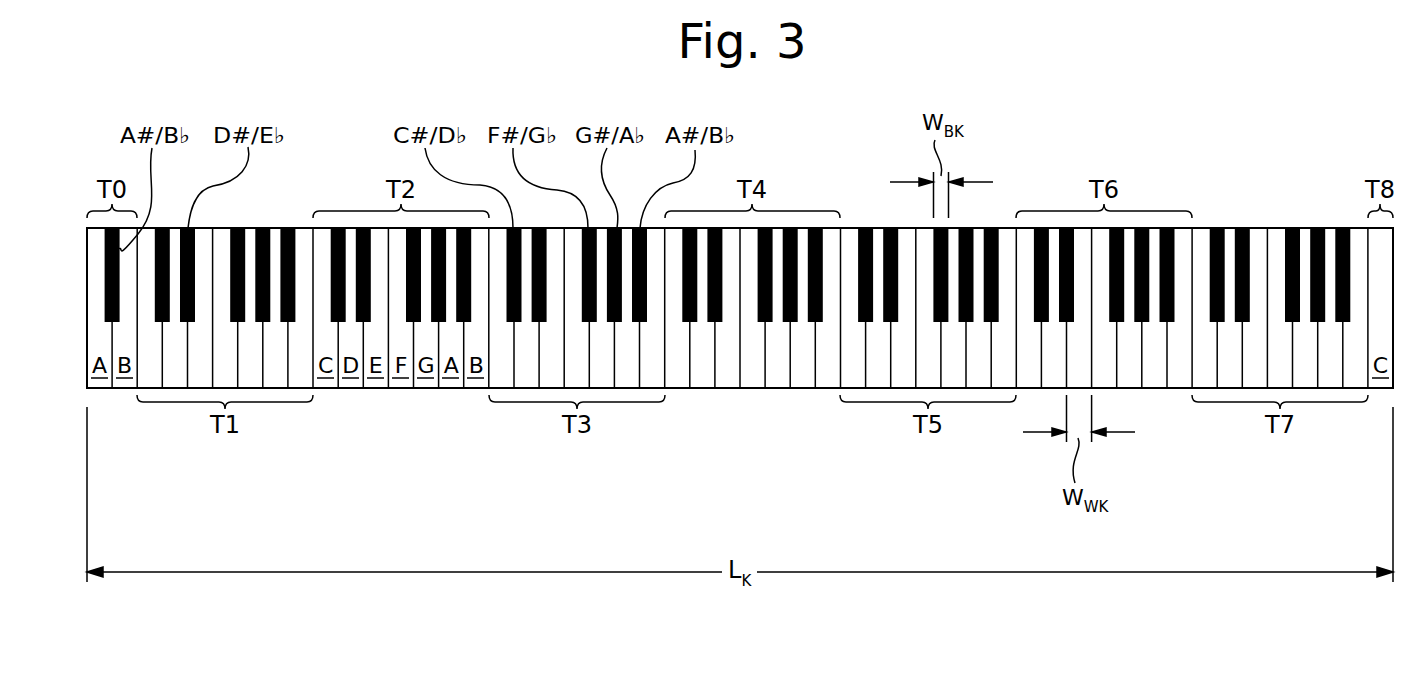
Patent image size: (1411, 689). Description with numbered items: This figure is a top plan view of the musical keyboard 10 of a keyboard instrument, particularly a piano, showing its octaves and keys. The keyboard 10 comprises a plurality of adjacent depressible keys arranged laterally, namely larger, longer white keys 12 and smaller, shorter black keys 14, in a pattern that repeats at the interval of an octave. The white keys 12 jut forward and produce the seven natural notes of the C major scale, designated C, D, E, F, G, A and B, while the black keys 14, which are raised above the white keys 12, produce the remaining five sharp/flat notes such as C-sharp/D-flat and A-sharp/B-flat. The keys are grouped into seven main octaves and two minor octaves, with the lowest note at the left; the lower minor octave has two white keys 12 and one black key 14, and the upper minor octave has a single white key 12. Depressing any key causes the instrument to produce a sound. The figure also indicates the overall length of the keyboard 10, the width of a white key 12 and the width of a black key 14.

The musical keyboard 10 is at (1340, 182).
The white keys 12 is at (822, 436).
The black keys 14 is at (1318, 228).